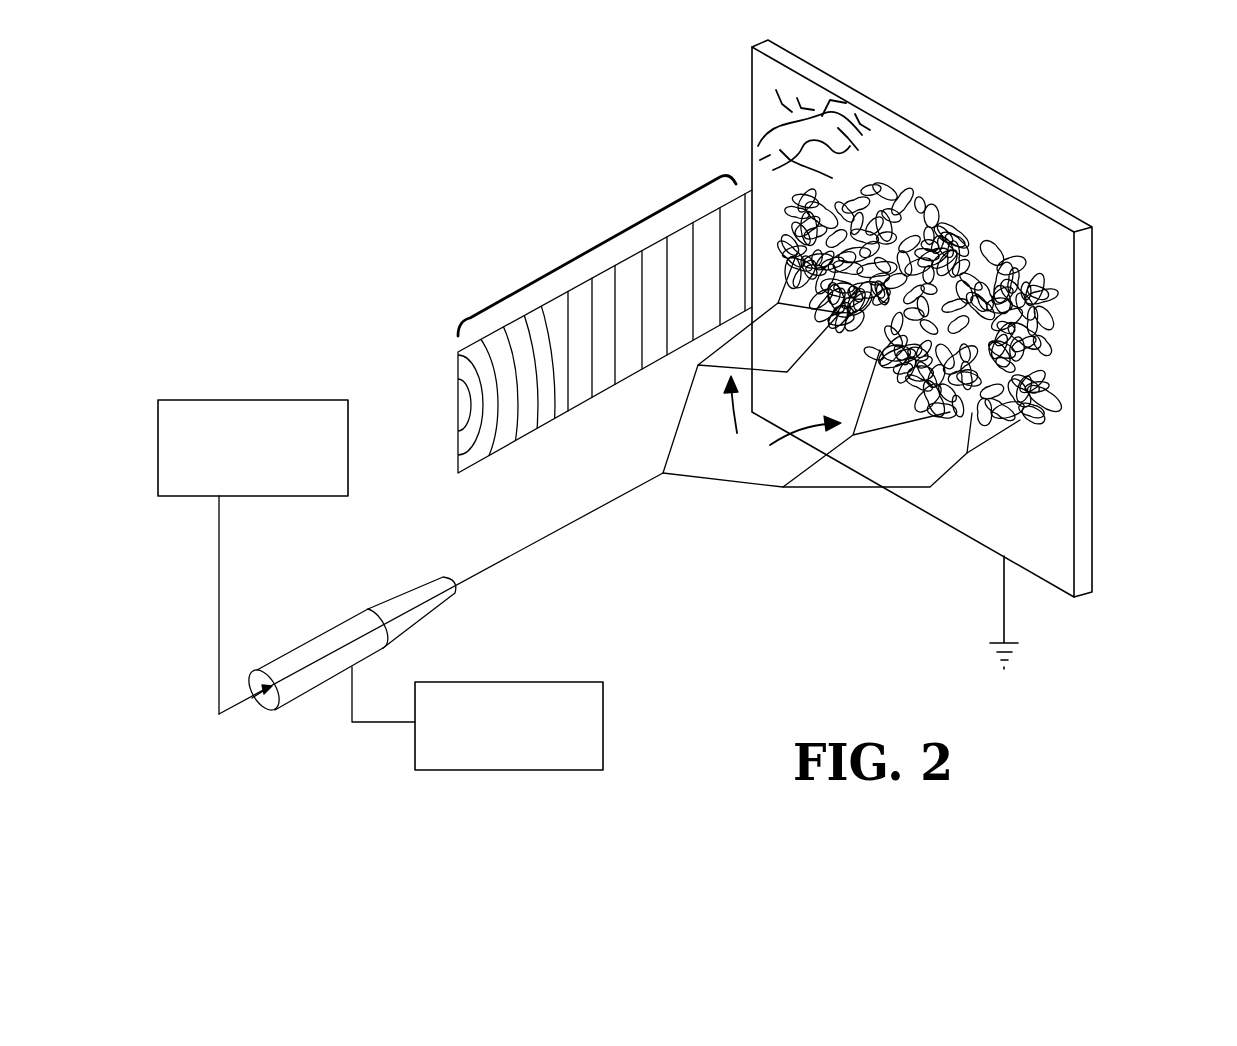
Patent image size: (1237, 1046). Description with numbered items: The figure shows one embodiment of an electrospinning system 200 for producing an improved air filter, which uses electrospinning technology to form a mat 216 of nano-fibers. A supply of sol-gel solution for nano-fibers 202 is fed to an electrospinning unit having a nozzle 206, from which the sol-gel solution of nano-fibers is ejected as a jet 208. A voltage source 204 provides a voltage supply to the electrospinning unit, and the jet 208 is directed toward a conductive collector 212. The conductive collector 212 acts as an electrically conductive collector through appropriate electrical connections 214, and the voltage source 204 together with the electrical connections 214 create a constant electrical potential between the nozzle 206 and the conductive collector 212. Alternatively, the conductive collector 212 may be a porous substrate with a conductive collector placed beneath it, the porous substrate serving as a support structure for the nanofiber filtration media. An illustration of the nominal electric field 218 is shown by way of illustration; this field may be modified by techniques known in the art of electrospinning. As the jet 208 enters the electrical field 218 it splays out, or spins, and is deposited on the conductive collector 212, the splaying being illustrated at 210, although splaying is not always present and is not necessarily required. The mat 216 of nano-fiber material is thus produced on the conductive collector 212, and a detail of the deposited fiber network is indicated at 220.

The electrospinning system 200 is at (447, 158).
The supply of sol-gel solution for nano-fibers 202 is at (247, 400).
The voltage source 204 is at (606, 700).
The nozzle 206 is at (430, 607).
The jet 208 is at (512, 560).
The splaying 210 is at (841, 370).
The conductive collector 212 is at (976, 153).
The electrical connections 214 is at (1000, 642).
The mat of nano-fibers 216 is at (1042, 362).
The electric field 218 is at (610, 250).
The fiber network 220 is at (822, 118).